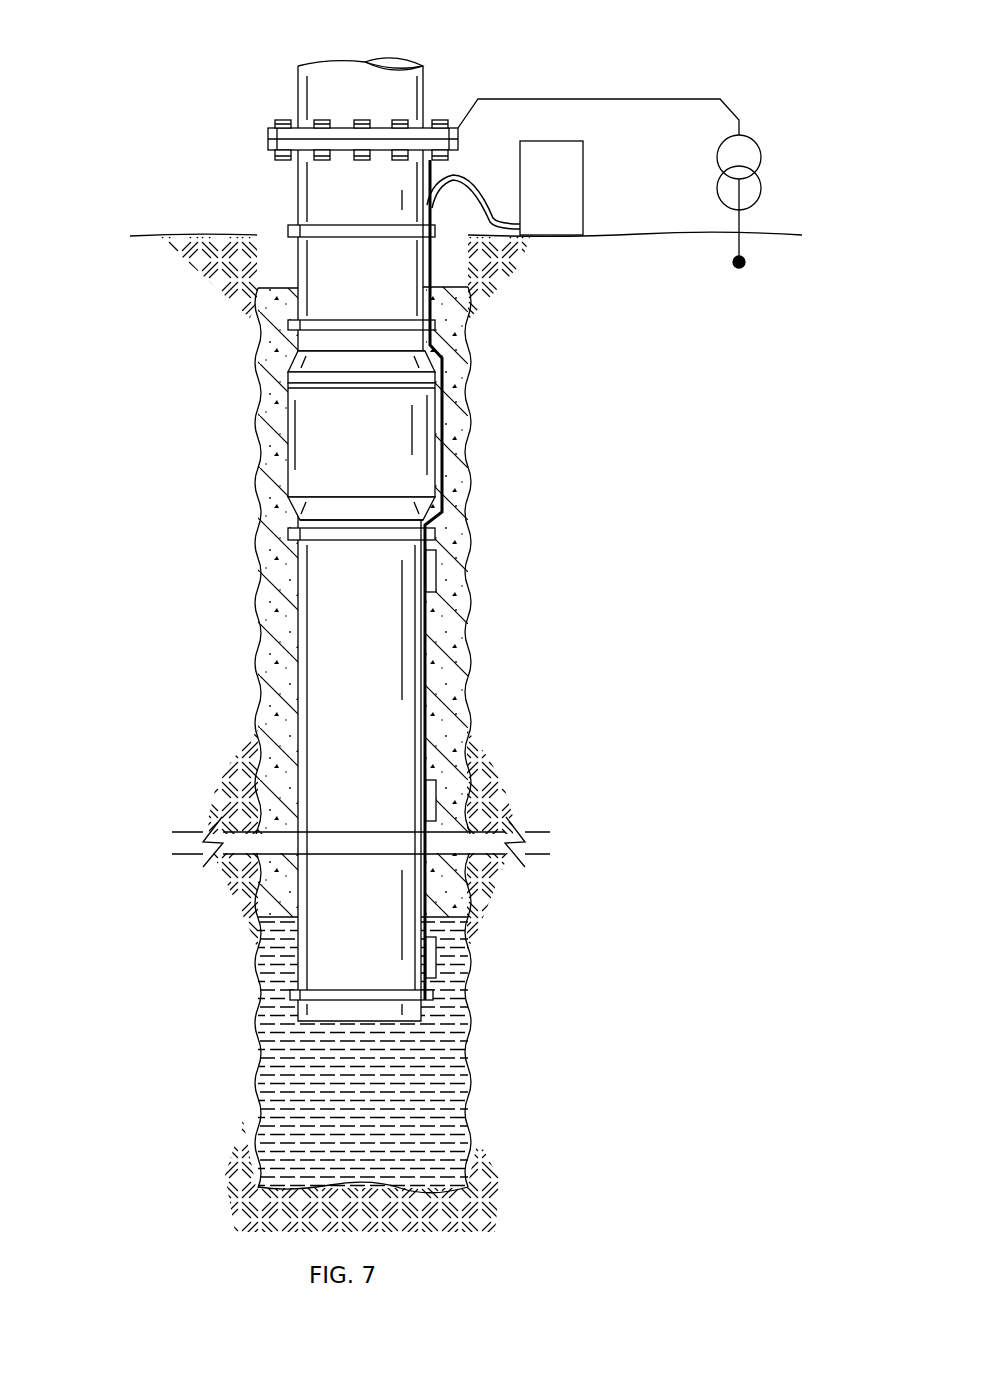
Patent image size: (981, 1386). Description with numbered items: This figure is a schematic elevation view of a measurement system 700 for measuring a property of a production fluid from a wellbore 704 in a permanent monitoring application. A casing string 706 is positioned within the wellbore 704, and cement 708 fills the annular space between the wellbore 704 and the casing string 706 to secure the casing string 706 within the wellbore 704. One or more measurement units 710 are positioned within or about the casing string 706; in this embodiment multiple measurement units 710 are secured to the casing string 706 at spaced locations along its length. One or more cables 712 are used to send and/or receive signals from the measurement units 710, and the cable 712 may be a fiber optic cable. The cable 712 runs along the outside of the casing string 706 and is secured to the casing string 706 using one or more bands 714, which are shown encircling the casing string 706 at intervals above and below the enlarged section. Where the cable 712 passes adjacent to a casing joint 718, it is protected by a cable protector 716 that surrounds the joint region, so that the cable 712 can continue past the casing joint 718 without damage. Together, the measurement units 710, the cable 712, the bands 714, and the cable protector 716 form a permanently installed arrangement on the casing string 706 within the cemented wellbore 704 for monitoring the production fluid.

The measurement system 700 is at (112, 72).
The wellbore 704 is at (258, 553).
The casing string 706 is at (298, 104).
The cement 708 is at (258, 455).
The measurement units 710 is at (437, 570).
The cable 712 is at (472, 178).
The bands 714 is at (353, 225).
The cable protector 716 is at (447, 412).
The casing joint 718 is at (422, 467).